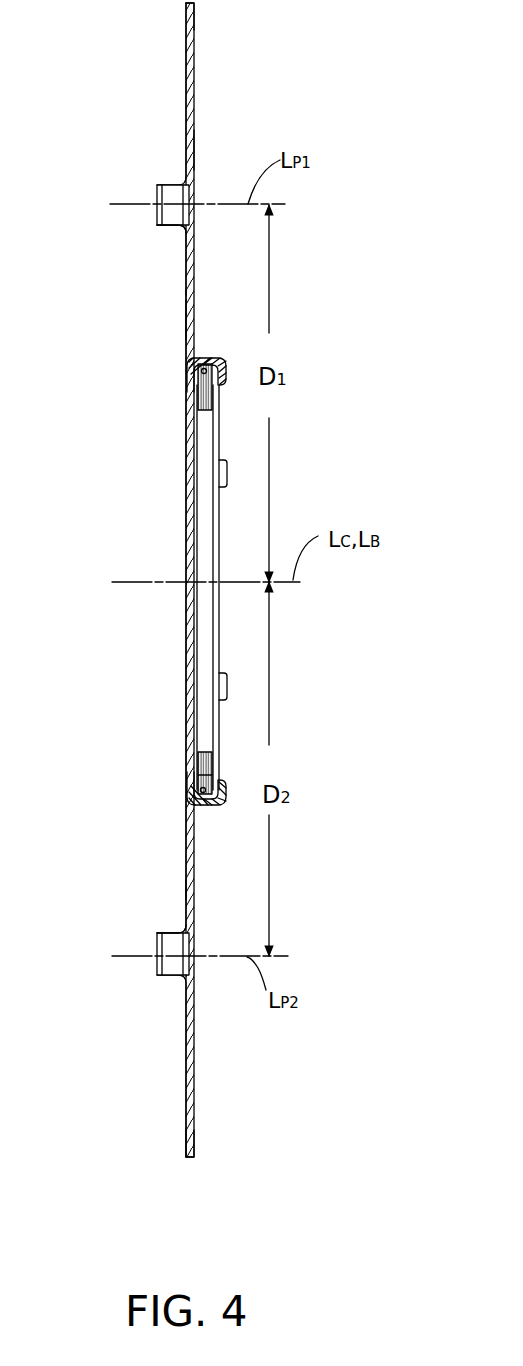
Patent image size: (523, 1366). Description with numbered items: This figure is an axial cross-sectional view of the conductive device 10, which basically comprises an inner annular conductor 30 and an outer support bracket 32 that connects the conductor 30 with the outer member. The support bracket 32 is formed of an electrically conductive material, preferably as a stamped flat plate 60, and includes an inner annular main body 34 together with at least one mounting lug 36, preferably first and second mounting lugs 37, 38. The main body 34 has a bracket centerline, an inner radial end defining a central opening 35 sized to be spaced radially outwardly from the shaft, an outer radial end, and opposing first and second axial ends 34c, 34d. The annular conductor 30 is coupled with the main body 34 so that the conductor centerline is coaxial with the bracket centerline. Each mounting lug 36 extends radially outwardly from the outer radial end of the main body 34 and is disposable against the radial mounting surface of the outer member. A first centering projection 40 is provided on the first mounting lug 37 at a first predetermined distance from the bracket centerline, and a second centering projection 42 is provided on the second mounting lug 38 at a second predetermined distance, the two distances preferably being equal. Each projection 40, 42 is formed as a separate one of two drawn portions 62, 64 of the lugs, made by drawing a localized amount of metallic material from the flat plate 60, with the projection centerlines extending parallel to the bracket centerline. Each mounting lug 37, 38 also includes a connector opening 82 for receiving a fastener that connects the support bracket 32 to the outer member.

The conductive device 10 is at (320, 284).
The inner annular conductor 30 is at (167, 580).
The outer support bracket 32 is at (150, 318).
The inner annular main body 34 is at (183, 372).
The first axial end 34c is at (201, 782).
The second axial end 34d is at (186, 782).
The central opening 35 is at (191, 488).
The mounting lug 36 is at (216, 148).
The first mounting lug 37 is at (193, 30).
The second mounting lug 38 is at (194, 1133).
The first centering projection 40 is at (163, 184).
The second centering projection 42 is at (168, 982).
The flat plate 60 is at (188, 888).
The drawn portion 62 is at (168, 228).
The drawn portion 64 is at (172, 932).
The connector opening 82 is at (191, 65).